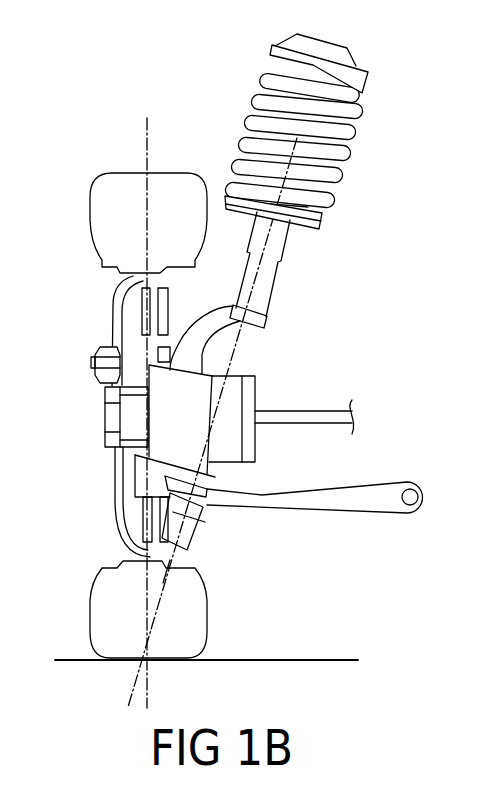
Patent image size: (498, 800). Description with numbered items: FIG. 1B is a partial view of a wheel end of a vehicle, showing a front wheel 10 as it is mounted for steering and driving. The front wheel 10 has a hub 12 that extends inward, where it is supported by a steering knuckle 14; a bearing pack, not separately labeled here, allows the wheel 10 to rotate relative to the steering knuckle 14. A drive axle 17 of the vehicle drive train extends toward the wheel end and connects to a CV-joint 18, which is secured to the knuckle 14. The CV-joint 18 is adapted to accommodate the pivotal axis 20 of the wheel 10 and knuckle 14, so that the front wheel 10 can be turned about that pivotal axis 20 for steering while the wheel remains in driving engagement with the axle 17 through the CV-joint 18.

The front wheel 10 is at (108, 172).
The hub 12 is at (108, 383).
The steering knuckle 14 is at (217, 323).
The drive axle 17 is at (327, 418).
The CV-joint 18 is at (235, 392).
The pivotal axis 20 is at (163, 583).